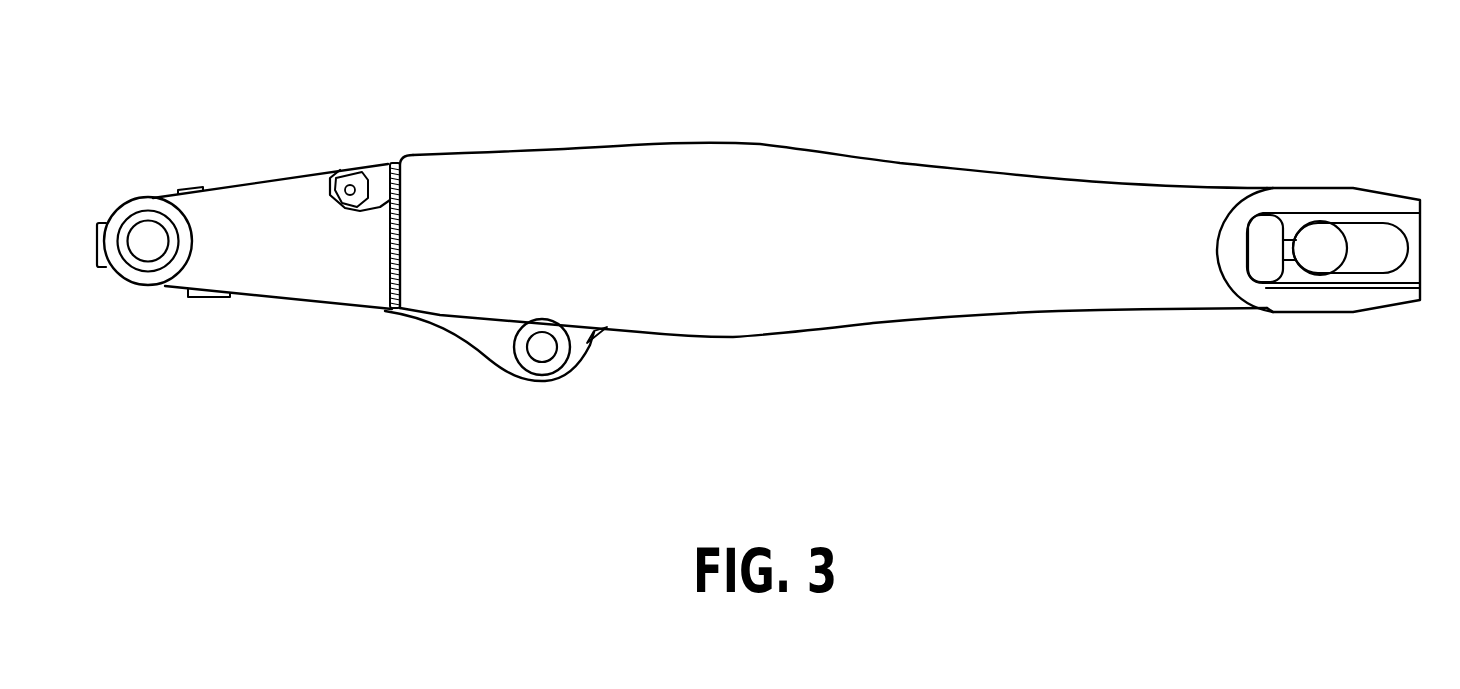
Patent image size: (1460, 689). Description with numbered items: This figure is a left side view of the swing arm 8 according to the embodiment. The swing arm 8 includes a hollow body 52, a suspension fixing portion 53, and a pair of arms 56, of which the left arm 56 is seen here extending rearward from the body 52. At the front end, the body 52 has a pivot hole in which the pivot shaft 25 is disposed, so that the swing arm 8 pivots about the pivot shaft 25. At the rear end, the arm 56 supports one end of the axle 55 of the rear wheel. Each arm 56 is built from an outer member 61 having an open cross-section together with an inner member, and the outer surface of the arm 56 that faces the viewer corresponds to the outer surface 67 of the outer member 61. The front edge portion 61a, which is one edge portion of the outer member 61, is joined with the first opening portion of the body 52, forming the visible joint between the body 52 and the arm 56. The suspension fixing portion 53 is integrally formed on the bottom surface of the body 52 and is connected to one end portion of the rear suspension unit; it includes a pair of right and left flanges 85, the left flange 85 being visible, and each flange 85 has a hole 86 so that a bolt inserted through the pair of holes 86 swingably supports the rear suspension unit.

The swing arm 8 is at (825, 106).
The pivot shaft 25 is at (141, 255).
The body 52 is at (295, 173).
The suspension fixing portion 53 is at (474, 342).
The axle 55 is at (1348, 237).
The arm 56 is at (1010, 172).
The outer member 61 is at (1063, 313).
The front edge portion 61a is at (388, 279).
The outer surface 67 is at (873, 258).
The flange 85 is at (537, 383).
The hole 86 is at (541, 334).